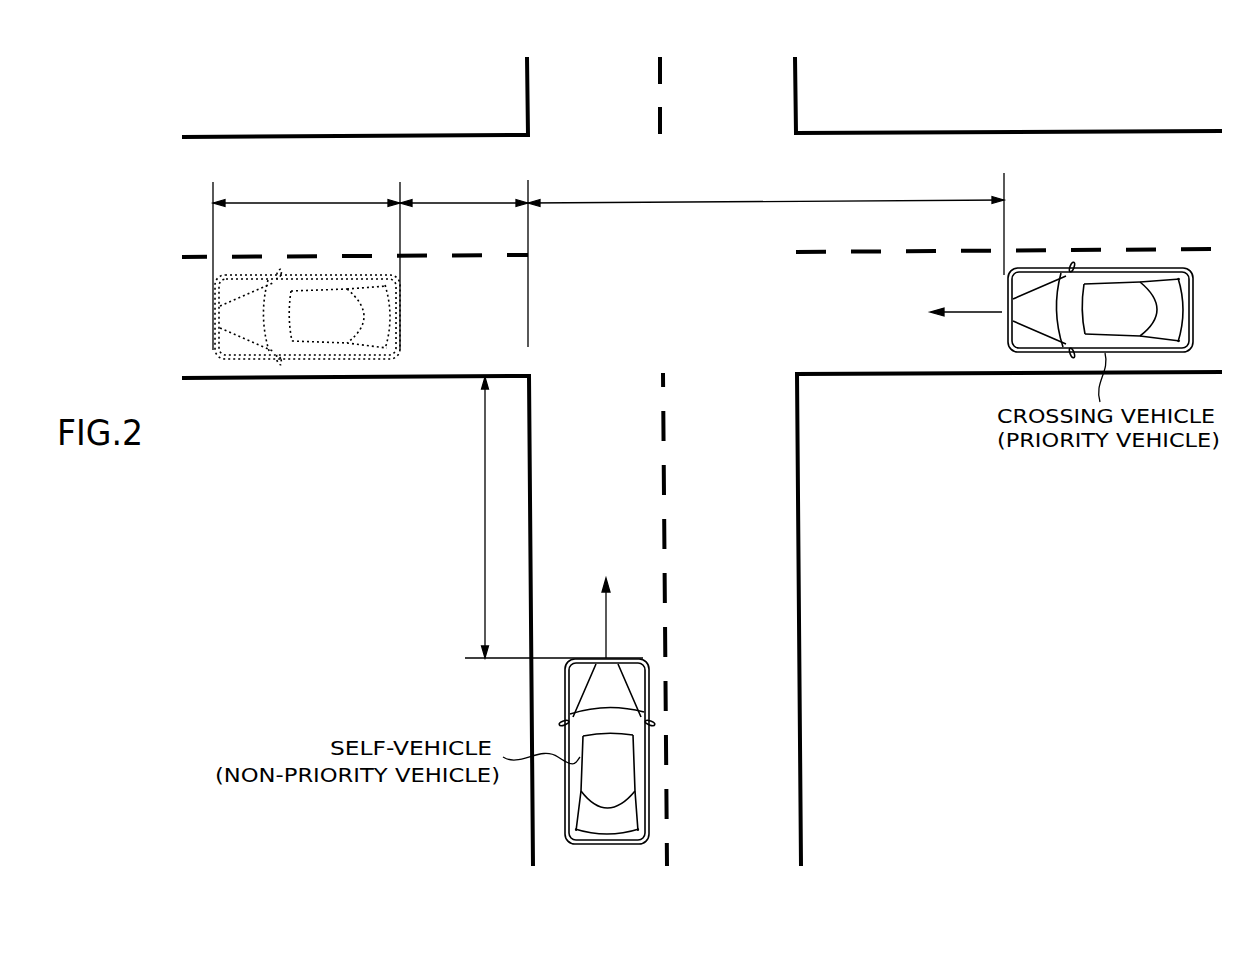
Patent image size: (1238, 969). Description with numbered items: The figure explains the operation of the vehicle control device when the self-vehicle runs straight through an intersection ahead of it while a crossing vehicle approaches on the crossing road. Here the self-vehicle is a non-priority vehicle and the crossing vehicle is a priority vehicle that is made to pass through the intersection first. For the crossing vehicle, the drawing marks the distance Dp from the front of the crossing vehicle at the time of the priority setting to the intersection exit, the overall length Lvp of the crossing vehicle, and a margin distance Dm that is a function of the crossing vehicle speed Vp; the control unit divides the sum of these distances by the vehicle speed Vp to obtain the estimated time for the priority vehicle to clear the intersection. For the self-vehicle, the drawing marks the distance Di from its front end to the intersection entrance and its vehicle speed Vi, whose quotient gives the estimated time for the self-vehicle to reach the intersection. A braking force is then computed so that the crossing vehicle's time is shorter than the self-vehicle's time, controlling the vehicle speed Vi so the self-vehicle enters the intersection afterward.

The overall length of the crossing vehicle Lvp is at (306, 190).
The margin distance Dm is at (464, 190).
The distance from the front of the crossing vehicle to the intersection exit Dp is at (766, 188).
The distance from the front end of the self-vehicle to the intersection entrance Di is at (551, 517).
The vehicle speed of the self-vehicle Vi is at (618, 618).
The vehicle speed of the crossing vehicle Vp is at (966, 299).